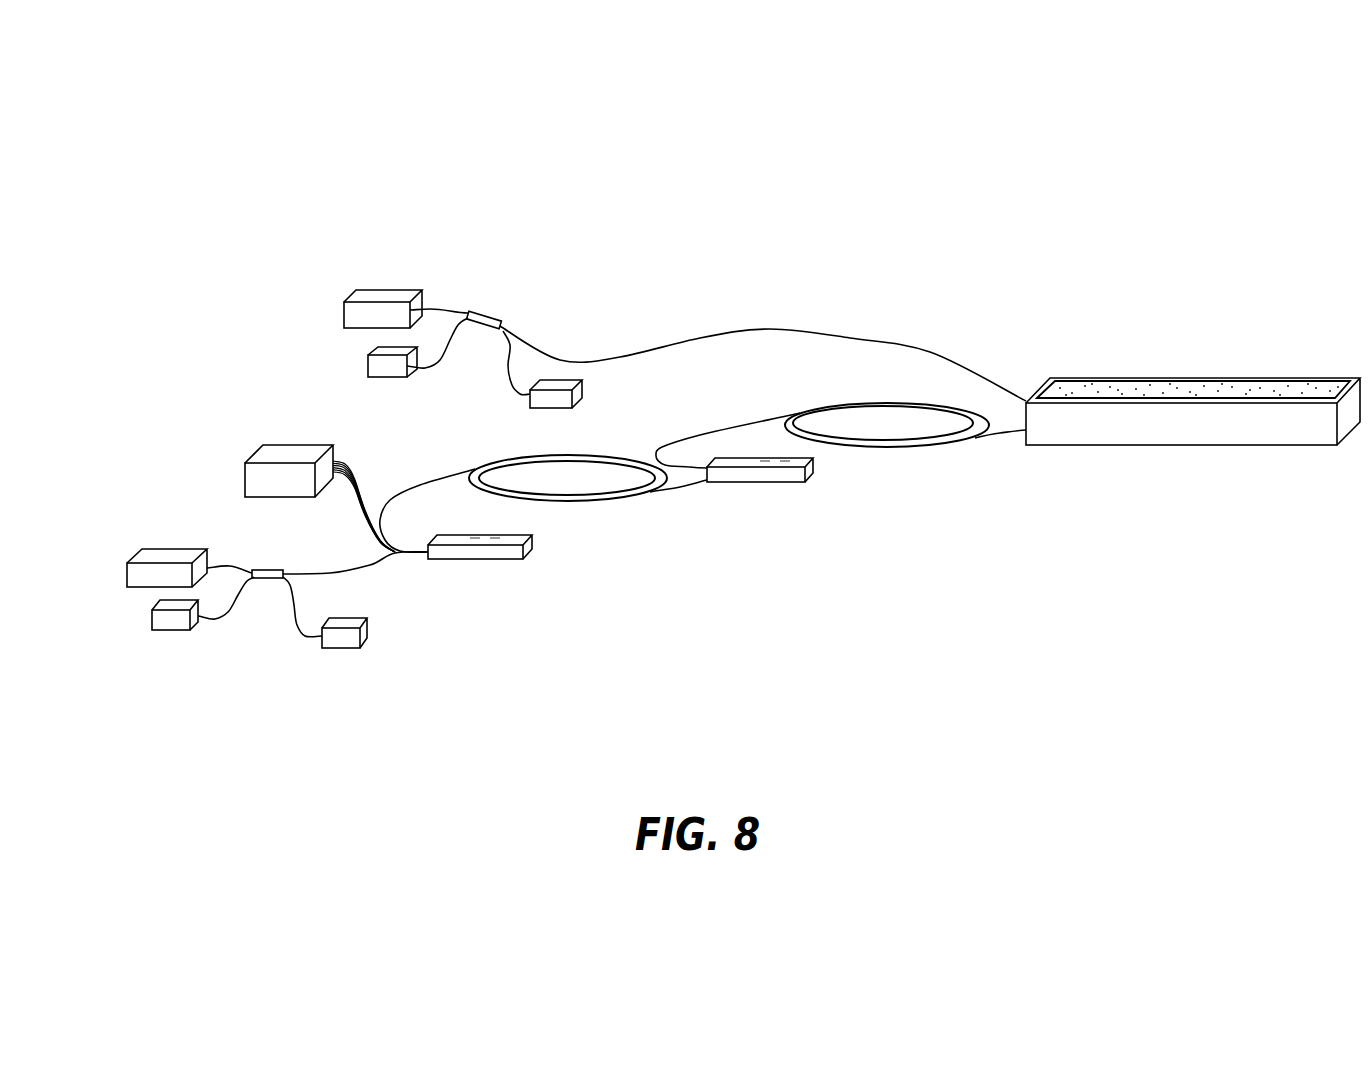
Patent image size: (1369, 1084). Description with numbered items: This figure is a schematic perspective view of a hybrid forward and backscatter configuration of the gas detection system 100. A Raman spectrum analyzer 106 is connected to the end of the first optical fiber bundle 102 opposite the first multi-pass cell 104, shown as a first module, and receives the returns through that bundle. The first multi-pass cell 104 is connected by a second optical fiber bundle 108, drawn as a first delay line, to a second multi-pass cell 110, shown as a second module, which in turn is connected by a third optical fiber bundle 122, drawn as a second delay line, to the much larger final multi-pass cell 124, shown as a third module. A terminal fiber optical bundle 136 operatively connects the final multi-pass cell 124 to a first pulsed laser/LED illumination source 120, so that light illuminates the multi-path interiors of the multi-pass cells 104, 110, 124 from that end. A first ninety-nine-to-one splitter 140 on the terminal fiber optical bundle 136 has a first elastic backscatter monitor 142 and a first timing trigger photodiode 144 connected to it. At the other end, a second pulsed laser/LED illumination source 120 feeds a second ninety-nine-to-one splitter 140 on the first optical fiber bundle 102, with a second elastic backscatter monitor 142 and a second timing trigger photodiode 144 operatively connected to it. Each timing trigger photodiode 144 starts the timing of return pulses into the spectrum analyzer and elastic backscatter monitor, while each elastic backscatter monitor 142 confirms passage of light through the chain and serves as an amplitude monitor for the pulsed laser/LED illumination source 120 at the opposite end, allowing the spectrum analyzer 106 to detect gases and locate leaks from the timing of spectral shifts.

The gas detection system 100 is at (1083, 203).
The first optical fiber bundle 102 is at (377, 567).
The first multi-pass cell 104 is at (507, 550).
The Raman spectrum analyzer 106 is at (298, 450).
The second optical fiber bundle 108 is at (643, 490).
The second multi-pass cell 110 is at (768, 473).
The pulsed laser/LED illumination source 120 is at (391, 297).
The third optical fiber bundle 122 is at (955, 440).
The final multi-pass cell 124 is at (1188, 433).
The terminal fiber optical bundle 136 is at (921, 348).
The 99:1 splitter 140 is at (482, 327).
The elastic backscatter monitor 142 is at (389, 370).
The timing trigger photodiode 144 is at (560, 383).